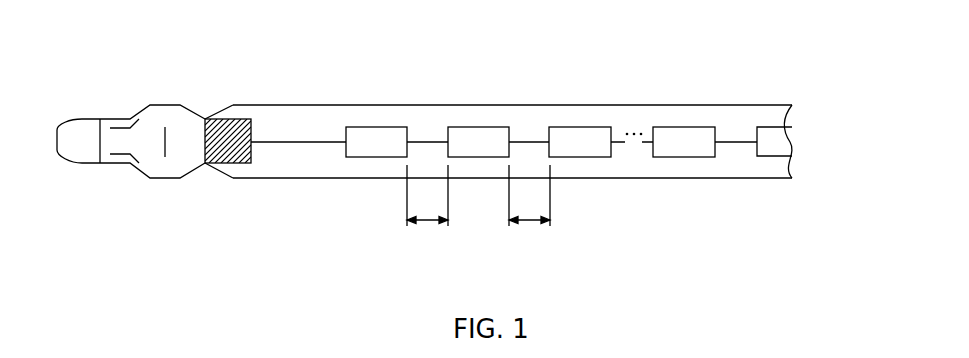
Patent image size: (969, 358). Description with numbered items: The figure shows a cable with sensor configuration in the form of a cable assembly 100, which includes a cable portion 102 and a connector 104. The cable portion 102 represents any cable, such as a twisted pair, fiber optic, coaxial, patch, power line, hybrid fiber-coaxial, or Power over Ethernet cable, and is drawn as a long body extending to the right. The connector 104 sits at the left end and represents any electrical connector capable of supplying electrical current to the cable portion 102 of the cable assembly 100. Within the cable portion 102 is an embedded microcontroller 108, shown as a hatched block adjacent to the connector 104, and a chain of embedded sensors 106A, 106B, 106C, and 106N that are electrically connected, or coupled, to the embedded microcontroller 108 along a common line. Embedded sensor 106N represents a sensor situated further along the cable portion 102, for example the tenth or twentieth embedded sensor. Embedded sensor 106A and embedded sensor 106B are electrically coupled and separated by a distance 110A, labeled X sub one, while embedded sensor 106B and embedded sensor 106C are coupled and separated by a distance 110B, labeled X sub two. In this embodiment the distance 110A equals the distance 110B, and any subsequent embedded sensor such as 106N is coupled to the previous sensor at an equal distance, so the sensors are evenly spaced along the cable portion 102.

The cable assembly 100 is at (431, 158).
The cable portion 102 is at (621, 98).
The connector 104 is at (147, 108).
The embedded sensor 106A is at (376, 142).
The embedded sensor 106B is at (478, 142).
The embedded sensor 106C is at (580, 142).
The embedded sensor 106N is at (684, 142).
The embedded microcontroller 108 is at (228, 108).
The distance 110A is at (432, 240).
The distance 110B is at (534, 240).